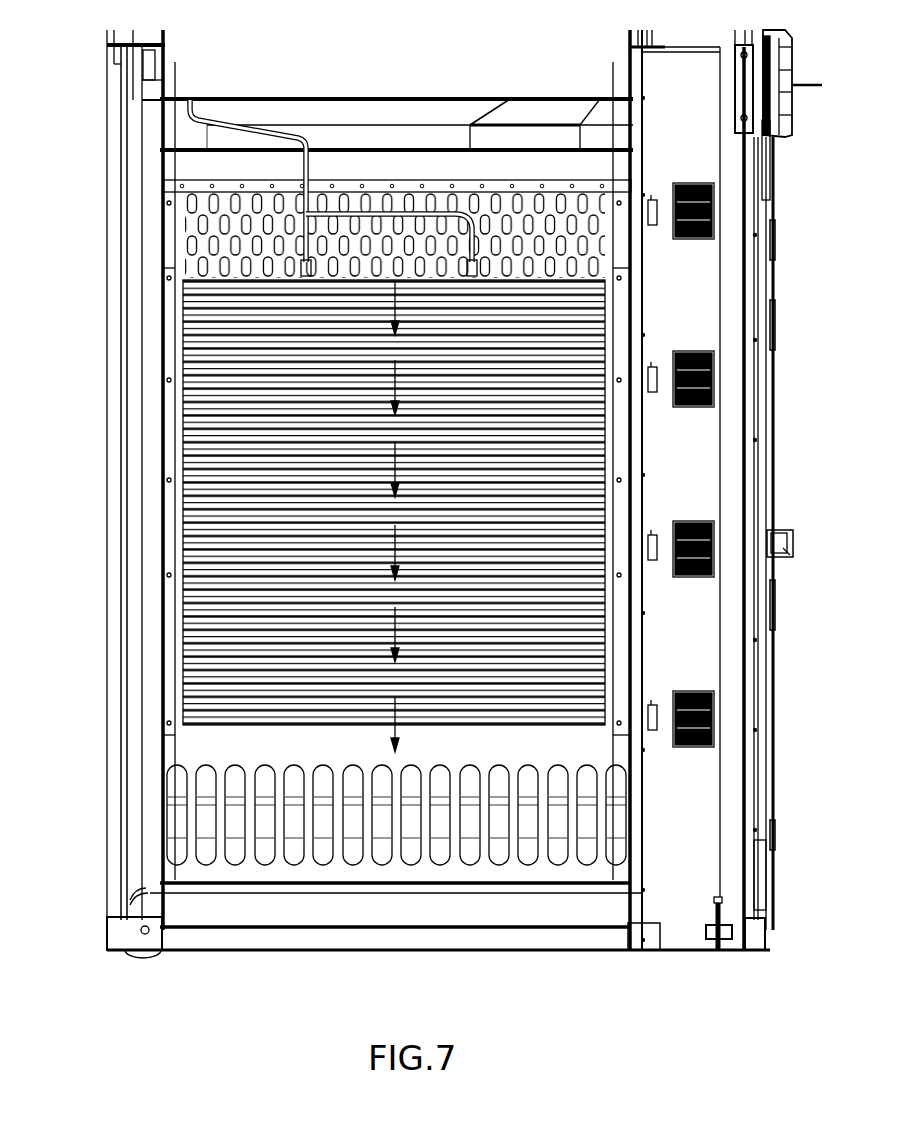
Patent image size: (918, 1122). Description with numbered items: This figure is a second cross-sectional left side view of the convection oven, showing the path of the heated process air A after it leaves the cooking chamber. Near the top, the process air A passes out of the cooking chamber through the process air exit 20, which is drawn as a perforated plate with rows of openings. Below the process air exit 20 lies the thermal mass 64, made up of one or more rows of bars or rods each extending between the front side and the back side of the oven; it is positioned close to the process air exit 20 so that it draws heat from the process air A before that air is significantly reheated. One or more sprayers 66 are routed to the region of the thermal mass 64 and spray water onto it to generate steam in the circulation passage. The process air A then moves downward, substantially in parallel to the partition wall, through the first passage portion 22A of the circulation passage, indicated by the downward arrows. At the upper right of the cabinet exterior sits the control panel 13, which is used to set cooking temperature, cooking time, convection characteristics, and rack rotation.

The control panel 13 is at (795, 80).
The process air exit 20 is at (185, 203).
The sprayers 66 is at (300, 268).
The thermal mass 64 is at (215, 405).
The process air A is at (395, 633).
The first passage portion 22A is at (250, 748).